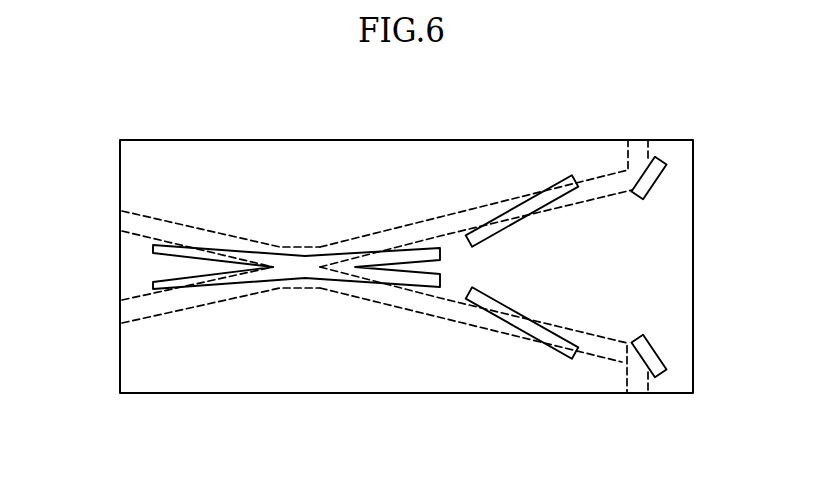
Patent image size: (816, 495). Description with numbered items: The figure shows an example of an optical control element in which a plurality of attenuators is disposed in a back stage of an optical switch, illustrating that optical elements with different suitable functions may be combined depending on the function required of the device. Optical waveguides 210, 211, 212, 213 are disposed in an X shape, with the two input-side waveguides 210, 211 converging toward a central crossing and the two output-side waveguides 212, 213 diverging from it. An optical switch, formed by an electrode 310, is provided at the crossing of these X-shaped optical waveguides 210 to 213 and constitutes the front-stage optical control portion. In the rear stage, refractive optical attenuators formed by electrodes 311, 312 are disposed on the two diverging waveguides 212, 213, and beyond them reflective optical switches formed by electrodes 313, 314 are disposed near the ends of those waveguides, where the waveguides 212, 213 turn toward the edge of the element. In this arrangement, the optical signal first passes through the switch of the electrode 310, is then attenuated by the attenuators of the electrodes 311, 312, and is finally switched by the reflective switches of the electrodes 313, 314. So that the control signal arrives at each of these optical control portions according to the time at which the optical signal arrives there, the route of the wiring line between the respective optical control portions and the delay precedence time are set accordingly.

The optical waveguide 210 is at (140, 225).
The optical waveguide 211 is at (140, 310).
The optical waveguide 212 is at (445, 227).
The optical waveguide 213 is at (440, 312).
The electrode 310 is at (295, 268).
The electrode 311 is at (538, 193).
The electrode 312 is at (522, 323).
The electrode 313 is at (657, 182).
The electrode 314 is at (657, 352).